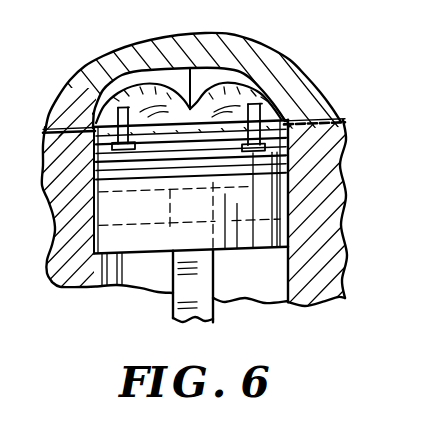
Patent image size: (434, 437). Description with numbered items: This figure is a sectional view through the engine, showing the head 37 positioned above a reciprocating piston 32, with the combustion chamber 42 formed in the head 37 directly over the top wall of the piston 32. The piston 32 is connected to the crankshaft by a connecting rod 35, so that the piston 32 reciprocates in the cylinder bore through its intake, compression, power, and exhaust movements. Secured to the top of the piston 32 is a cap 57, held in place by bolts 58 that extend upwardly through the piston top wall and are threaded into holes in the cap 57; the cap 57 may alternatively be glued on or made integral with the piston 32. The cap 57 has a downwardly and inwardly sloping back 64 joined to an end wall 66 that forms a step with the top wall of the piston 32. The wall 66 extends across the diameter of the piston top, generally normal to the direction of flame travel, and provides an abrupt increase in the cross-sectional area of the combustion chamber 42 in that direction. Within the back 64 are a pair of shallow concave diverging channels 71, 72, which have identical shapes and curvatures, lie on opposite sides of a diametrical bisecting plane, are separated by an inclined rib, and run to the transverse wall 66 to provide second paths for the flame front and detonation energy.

The piston 32 is at (132, 268).
The connecting rod 35 is at (213, 319).
The head 37 is at (238, 50).
The combustion chamber 42 is at (176, 77).
The cap 57 is at (112, 91).
The bolts 58 is at (312, 69).
The back 64 is at (190, 106).
The wall 66 is at (286, 118).
The channel 71 is at (248, 103).
The channel 72 is at (143, 95).